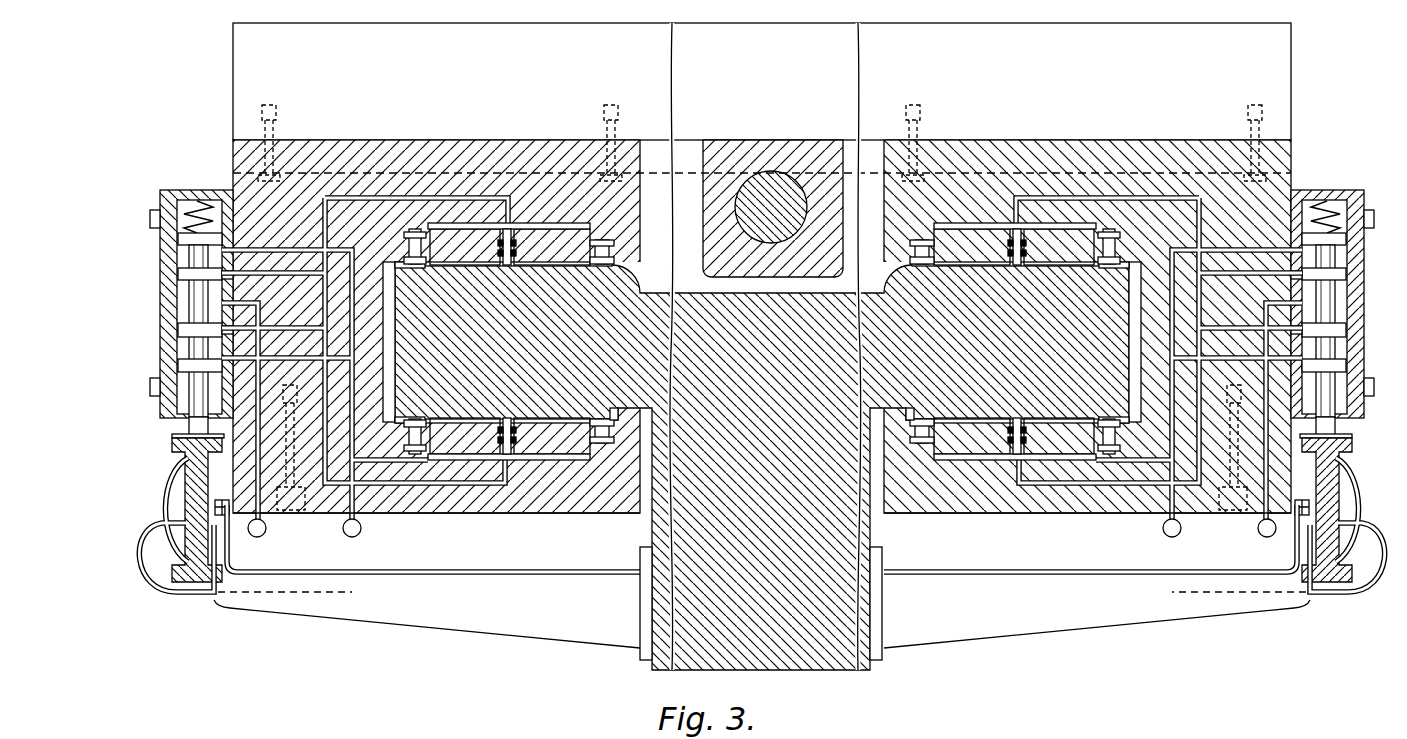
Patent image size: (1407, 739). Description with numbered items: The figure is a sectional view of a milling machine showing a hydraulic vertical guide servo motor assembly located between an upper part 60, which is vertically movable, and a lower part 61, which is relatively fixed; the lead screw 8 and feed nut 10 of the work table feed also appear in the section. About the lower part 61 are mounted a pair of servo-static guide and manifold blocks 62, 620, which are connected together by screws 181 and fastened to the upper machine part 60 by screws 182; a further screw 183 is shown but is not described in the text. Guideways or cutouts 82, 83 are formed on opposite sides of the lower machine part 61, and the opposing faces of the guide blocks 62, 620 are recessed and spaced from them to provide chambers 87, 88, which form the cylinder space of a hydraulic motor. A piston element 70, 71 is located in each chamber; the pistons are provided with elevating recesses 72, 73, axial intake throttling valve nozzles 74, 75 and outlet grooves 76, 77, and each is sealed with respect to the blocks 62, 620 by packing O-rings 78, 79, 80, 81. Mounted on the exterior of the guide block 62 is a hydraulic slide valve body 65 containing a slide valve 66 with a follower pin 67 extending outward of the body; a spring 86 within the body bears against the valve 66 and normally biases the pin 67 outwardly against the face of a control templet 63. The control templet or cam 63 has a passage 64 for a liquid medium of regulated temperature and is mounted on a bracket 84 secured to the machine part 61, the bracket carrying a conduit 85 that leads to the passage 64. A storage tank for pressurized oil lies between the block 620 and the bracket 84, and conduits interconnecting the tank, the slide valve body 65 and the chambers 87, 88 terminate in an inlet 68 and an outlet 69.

The upper part 60 is at (233, 73).
The servo-static guide and manifold block 62 is at (638, 210).
The feed nut 10 is at (703, 245).
The lead screw 8 is at (773, 176).
The lower part 61 is at (700, 294).
The spring 86 is at (233, 174).
The hydraulic slide valve body 65 is at (166, 204).
The slide valve 66 is at (178, 290).
The follower pin 67 is at (188, 429).
The inlet 68 is at (257, 538).
The outlet 69 is at (362, 528).
The screws 181 is at (293, 511).
The screws 182 is at (262, 126).
The bolt 183 is at (618, 126).
The piston element 70 is at (490, 226).
The piston element 71 is at (575, 460).
The elevating recess 72 is at (545, 266).
The elevating recess 73 is at (568, 418).
The axial intake throttling valve nozzle 74 is at (511, 236).
The axial intake throttling valve nozzle 75 is at (509, 420).
The outlet groove 76 is at (430, 266).
The outlet groove 77 is at (432, 418).
The packing O-ring 78 is at (428, 227).
The packing O-ring 79 is at (412, 418).
The packing O-ring 80 is at (396, 268).
The packing O-ring 81 is at (448, 460).
The guideway or cutout 82 is at (472, 266).
The guideway or cutout 83 is at (612, 412).
The chamber 87 is at (462, 227).
The chamber 88 is at (528, 460).
The control templet 63 is at (185, 490).
The passage 64 is at (215, 508).
The conduit 85 is at (212, 596).
The bracket 84 is at (390, 572).
The servo-static guide and manifold block 620 is at (560, 514).